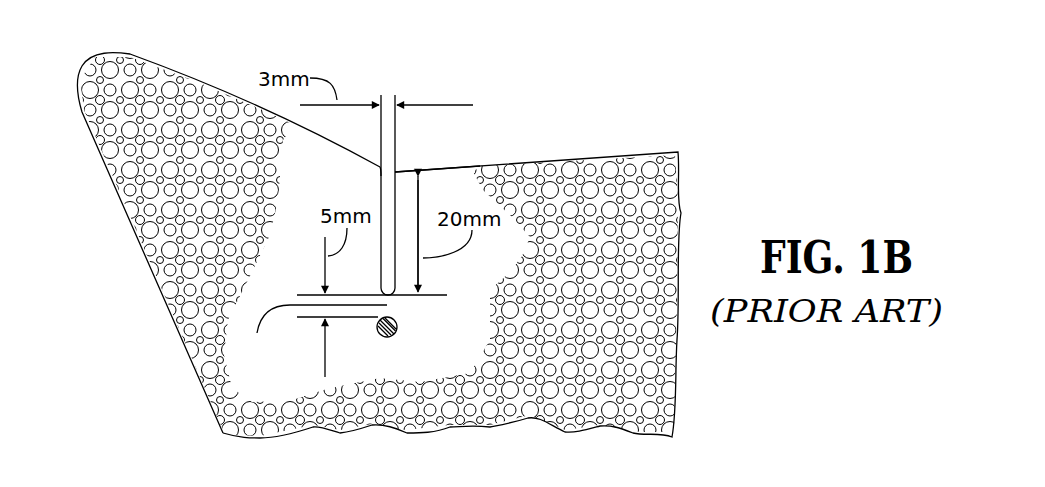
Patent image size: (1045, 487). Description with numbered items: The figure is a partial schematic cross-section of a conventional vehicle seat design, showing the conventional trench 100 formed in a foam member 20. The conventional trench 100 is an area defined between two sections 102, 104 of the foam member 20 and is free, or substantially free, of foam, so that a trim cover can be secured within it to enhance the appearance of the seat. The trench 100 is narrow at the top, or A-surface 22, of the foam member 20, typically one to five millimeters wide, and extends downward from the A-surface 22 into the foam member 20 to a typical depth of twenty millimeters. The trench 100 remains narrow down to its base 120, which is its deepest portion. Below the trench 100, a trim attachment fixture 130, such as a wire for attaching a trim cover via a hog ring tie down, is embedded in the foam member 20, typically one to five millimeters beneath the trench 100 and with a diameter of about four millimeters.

The foam member 20 is at (506, 57).
The A-surface 22 is at (588, 154).
The conventional trench 100 is at (370, 188).
The section of foam member 102 is at (467, 162).
The section of foam member 104 is at (221, 84).
The base 120 is at (313, 335).
The trim attachment fixture 130 is at (397, 329).